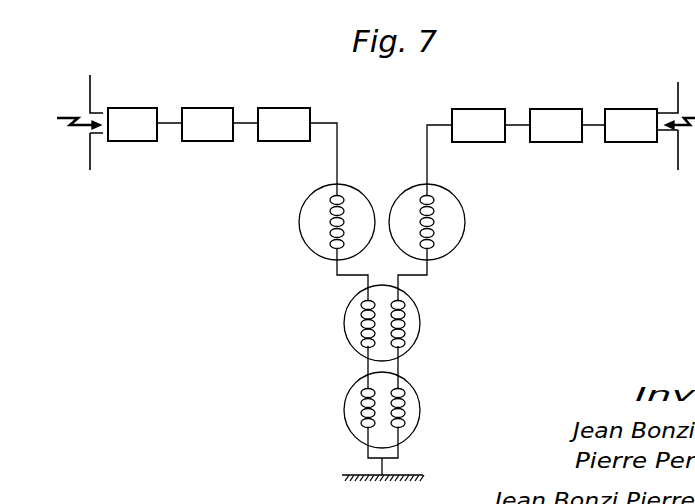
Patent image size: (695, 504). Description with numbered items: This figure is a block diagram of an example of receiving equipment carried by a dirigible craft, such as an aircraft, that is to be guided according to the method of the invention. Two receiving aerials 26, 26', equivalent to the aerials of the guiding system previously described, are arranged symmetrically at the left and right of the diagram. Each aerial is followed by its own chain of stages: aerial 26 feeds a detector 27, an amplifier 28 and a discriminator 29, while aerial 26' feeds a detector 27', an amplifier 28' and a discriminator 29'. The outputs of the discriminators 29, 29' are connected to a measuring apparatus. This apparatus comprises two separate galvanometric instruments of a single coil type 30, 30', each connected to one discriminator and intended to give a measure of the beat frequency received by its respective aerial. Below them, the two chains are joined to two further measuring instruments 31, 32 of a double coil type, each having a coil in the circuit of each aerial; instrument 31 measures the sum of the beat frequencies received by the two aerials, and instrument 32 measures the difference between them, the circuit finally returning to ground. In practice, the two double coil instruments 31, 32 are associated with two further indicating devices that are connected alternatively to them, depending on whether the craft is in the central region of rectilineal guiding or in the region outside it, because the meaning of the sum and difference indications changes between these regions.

The receiving aerial 26 is at (100, 120).
The detector 27 is at (132, 124).
The amplifier 28 is at (207, 124).
The discriminator 29 is at (284, 124).
The receiving aerial 26' is at (665, 120).
The detector 27' is at (631, 125).
The amplifier 28' is at (556, 125).
The discriminator 29' is at (478, 125).
The single coil galvanometric instrument 30 is at (316, 222).
The single coil galvanometric instrument 30' is at (451, 222).
The double coil measuring instrument 31 is at (410, 320).
The double coil measuring instrument 32 is at (410, 403).